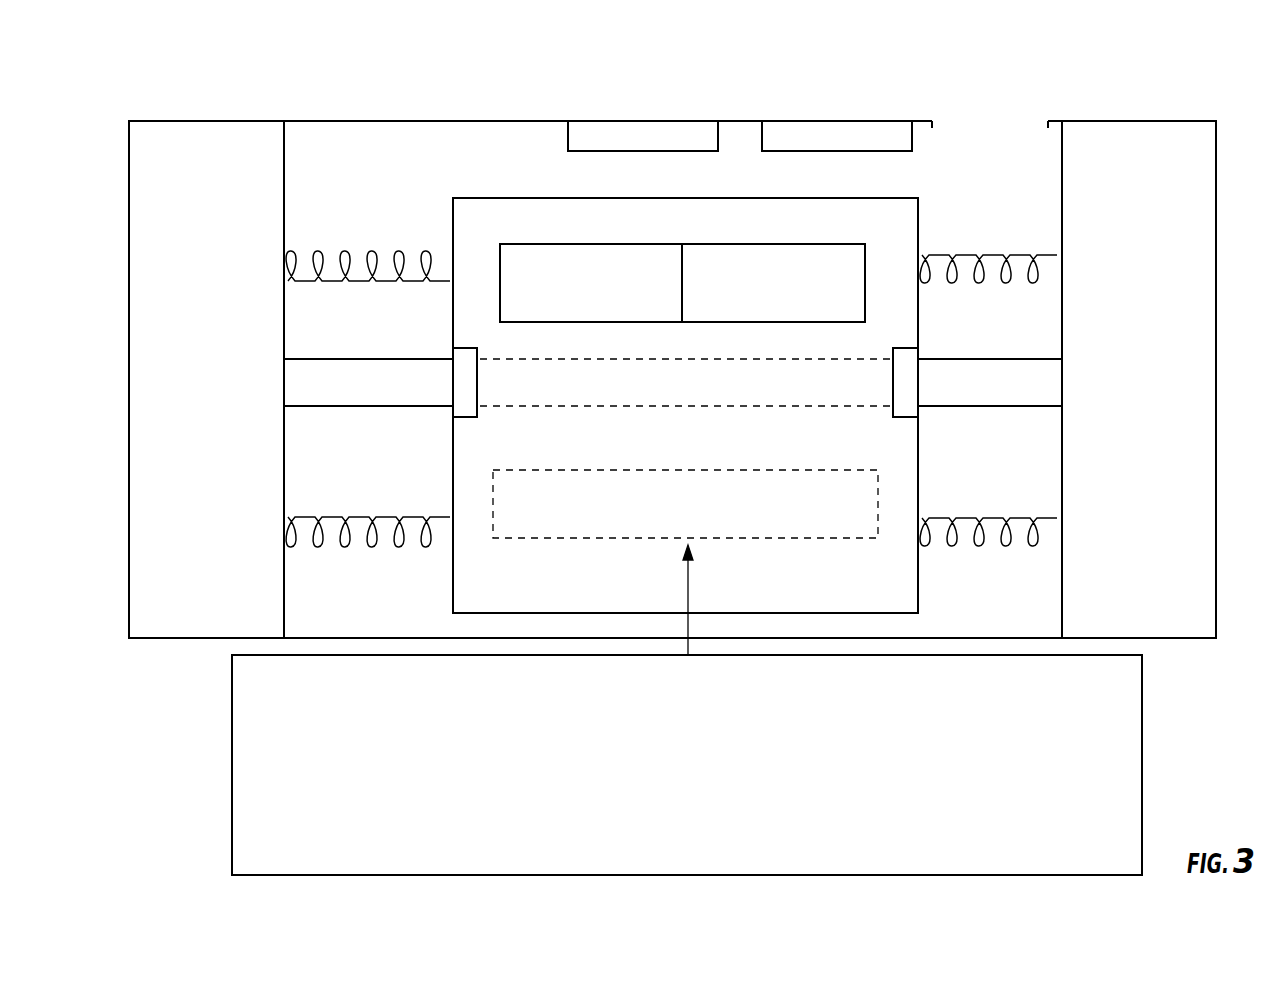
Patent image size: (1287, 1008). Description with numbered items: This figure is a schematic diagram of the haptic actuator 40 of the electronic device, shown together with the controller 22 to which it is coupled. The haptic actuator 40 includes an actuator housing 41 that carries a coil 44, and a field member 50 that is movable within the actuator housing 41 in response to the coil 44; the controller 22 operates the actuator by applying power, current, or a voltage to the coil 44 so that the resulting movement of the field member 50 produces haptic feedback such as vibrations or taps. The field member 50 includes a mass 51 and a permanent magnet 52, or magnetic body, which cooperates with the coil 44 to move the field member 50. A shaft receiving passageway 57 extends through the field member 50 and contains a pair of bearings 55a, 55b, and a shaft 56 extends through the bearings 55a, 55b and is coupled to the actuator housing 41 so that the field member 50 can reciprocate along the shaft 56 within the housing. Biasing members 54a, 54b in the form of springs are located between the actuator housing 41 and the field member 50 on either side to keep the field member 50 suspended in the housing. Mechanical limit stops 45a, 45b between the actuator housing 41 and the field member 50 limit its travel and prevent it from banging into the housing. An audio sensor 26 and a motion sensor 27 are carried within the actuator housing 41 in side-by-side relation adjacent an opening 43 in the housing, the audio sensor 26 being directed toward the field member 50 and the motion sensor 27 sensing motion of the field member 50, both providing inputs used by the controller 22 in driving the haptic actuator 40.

The haptic actuator 40 is at (155, 85).
The actuator housing 41 is at (335, 120).
The opening 43 is at (995, 125).
The mechanical limit stop 45a is at (129, 504).
The mechanical limit stop 45b is at (1216, 591).
The motion sensor 27 is at (636, 121).
The audio sensor 26 is at (832, 121).
The field member 50 is at (430, 190).
The mass 51 is at (815, 243).
The permanent magnet 52 is at (572, 243).
The shaft 56 is at (284, 383).
The shaft receiving passageway 57 is at (562, 408).
The bearing 55a is at (463, 347).
The bearing 55b is at (907, 347).
The biasing member 54a is at (290, 268).
The biasing member 54b is at (1053, 267).
The coil 44 is at (493, 500).
The controller 22 is at (232, 765).